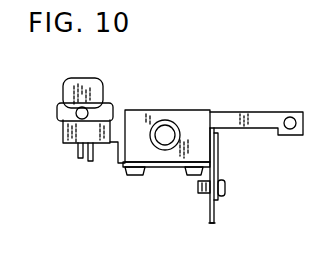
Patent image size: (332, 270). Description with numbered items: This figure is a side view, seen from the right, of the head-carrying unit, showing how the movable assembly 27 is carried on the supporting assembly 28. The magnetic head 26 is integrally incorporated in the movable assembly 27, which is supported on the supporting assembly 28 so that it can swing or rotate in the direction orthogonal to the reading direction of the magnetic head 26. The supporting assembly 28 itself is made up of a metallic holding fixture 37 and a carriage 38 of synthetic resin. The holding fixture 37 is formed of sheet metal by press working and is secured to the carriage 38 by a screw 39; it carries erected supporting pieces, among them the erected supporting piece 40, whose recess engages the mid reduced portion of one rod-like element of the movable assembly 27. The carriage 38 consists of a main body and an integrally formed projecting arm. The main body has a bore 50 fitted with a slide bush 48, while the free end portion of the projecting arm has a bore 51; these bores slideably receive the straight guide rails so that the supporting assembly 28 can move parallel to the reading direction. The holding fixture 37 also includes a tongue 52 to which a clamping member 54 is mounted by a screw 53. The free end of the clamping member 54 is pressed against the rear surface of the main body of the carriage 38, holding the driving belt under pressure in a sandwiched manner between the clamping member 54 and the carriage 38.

The magnetic head 26 is at (88, 79).
The movable assembly 27 is at (50, 118).
The supporting assembly 28 is at (145, 170).
The holding fixture 37 is at (115, 167).
The carriage 38 is at (203, 111).
The screw 39 is at (135, 176).
The erected supporting piece 40 is at (193, 178).
The slide bush 48 is at (162, 124).
The bore 50 is at (170, 126).
The bore 51 is at (290, 117).
The tongue 52 is at (212, 215).
The screw 53 is at (222, 190).
The clamping member 54 is at (216, 145).